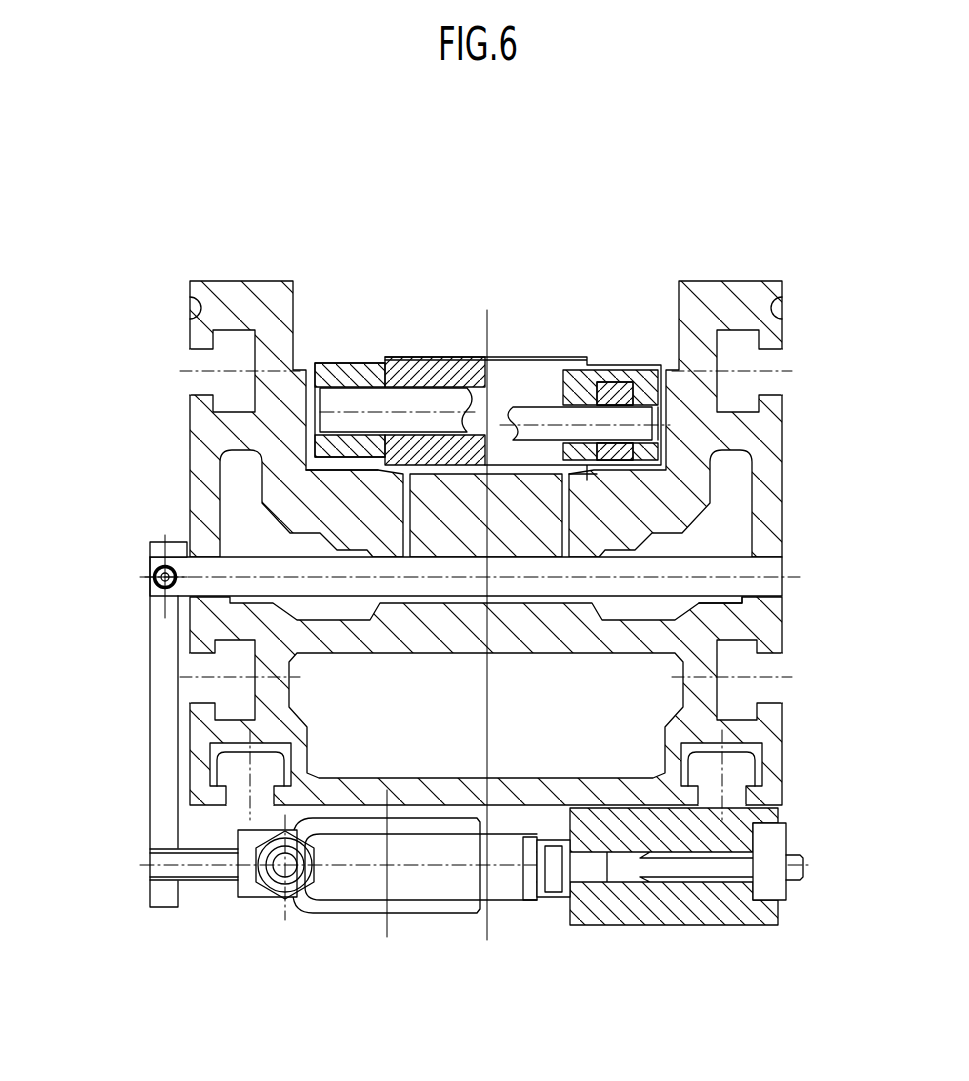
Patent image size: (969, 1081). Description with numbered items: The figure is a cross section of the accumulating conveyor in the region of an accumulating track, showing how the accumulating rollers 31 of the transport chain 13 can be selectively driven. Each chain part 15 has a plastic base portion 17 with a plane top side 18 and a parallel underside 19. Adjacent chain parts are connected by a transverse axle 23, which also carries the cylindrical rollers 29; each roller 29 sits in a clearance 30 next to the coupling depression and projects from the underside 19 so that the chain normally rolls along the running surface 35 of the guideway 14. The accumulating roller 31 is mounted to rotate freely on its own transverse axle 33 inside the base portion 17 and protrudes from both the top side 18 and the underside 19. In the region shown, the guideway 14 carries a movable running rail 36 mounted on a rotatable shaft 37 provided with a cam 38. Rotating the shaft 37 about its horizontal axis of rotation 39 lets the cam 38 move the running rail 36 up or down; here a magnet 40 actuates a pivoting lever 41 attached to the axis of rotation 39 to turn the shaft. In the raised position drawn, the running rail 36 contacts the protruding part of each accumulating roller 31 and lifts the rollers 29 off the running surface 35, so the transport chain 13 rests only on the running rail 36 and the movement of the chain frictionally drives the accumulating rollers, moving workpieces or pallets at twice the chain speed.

The transport chain 13 is at (562, 322).
The guideway 14 is at (762, 450).
The chain part 15 is at (355, 363).
The base portion 17 is at (640, 368).
The top side 18 is at (325, 363).
The underside 19 is at (340, 470).
The axle 23 is at (523, 403).
The roller 29 is at (626, 474).
The clearance 30 is at (615, 368).
The accumulating roller 31 is at (425, 357).
The axle 33 is at (343, 420).
The running surface 35 is at (613, 473).
The running rail 36 is at (450, 516).
The shaft 37 is at (775, 615).
The cam 38 is at (500, 548).
The axis of rotation 39 is at (797, 580).
The magnet 40 is at (357, 883).
The pivoting lever 41 is at (167, 742).